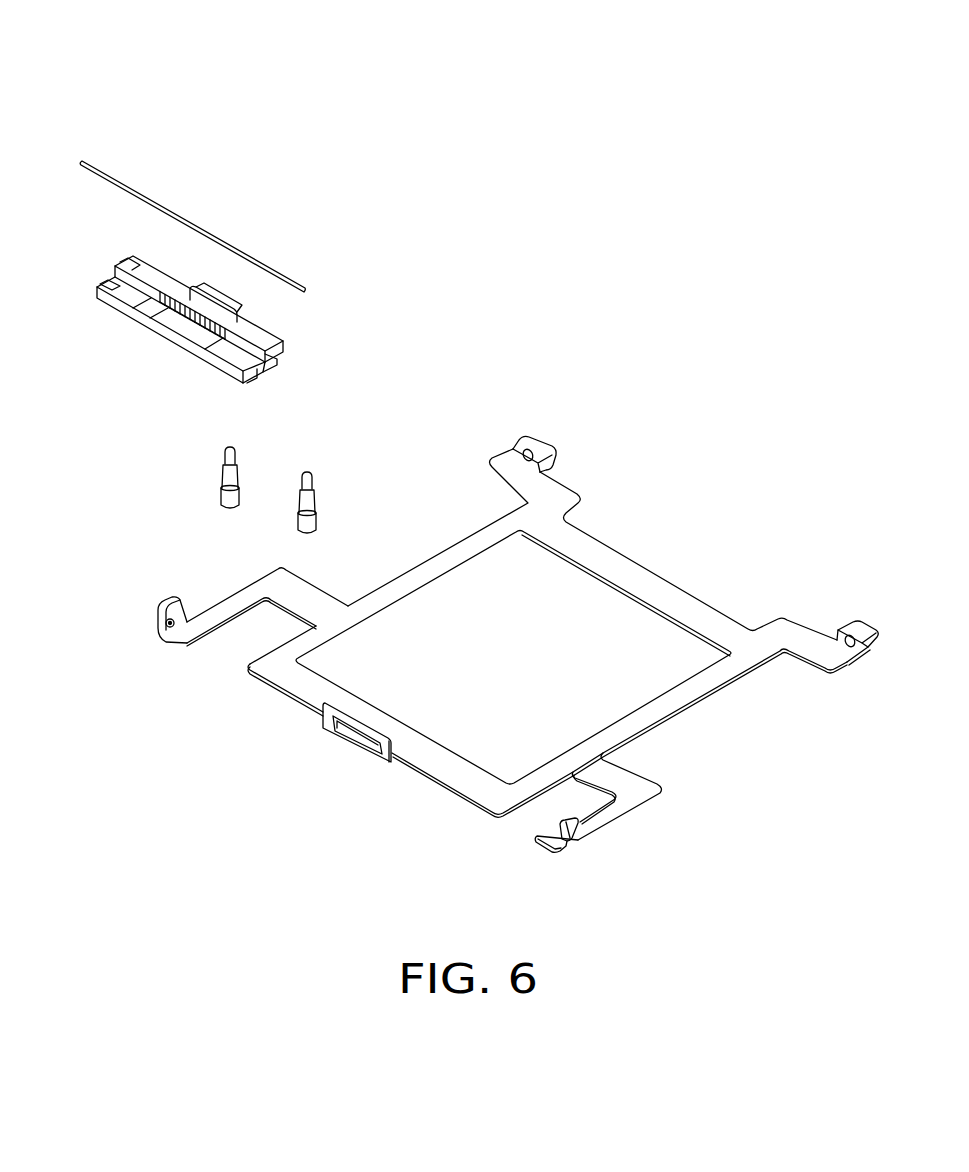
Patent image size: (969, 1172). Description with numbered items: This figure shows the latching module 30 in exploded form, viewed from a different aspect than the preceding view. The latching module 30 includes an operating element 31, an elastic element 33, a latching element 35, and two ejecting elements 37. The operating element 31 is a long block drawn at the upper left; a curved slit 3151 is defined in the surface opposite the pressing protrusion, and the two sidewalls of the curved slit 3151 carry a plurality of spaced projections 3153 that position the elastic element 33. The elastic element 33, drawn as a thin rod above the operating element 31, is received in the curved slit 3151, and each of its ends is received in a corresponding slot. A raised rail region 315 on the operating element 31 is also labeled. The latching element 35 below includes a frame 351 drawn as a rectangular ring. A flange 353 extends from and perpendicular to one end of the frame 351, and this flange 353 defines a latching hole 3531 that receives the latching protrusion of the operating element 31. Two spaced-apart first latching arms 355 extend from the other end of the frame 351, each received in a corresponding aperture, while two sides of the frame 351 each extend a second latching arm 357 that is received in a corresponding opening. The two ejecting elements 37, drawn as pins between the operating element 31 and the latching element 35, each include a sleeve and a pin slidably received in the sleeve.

The latching module 30 is at (361, 66).
The operating element 31 is at (118, 265).
The elastic element 33 is at (262, 264).
The latching element 35 is at (452, 515).
The ejecting element 37 is at (226, 472).
The protruding rail 315 is at (268, 341).
The frame 351 is at (477, 787).
The flange 353 is at (385, 758).
The first latching arm 355 is at (810, 640).
The second latching arm 357 is at (633, 788).
The curved slit 3151 is at (280, 370).
The spaced projections 3153 is at (187, 318).
The latching hole 3531 is at (340, 730).